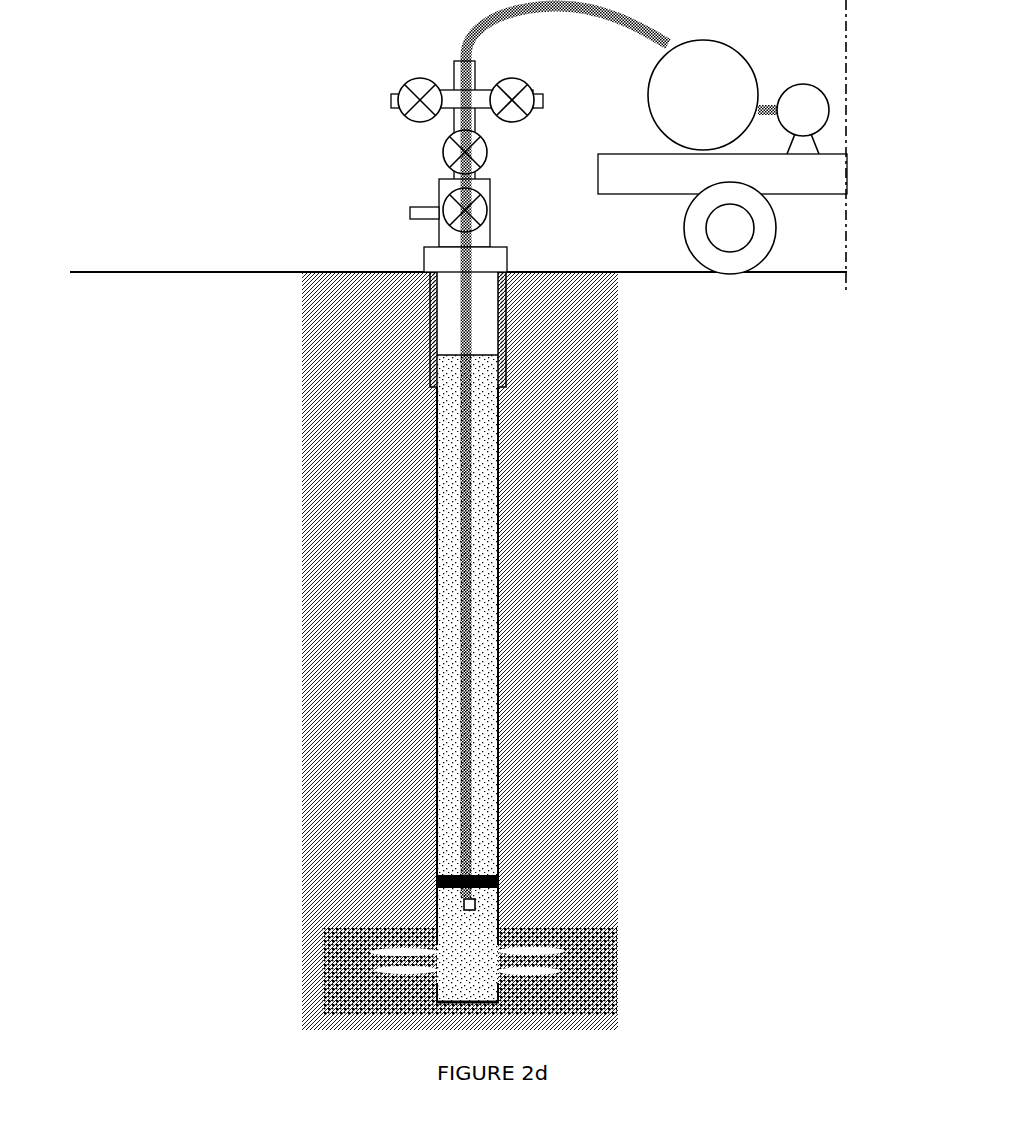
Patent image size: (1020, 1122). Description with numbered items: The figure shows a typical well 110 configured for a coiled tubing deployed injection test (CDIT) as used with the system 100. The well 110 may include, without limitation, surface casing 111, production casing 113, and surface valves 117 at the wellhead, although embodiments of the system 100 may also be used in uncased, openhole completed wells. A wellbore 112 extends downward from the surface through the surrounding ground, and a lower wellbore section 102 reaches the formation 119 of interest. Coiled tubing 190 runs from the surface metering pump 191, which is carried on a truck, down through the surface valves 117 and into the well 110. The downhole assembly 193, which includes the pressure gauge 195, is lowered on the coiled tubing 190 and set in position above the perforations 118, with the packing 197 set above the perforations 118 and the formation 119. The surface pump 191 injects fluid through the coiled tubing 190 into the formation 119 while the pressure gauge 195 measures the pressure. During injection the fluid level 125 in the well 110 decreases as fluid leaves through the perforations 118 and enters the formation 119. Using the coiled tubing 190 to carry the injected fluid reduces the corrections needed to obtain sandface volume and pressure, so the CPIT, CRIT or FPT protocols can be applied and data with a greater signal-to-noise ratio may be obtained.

The system 100 is at (436, 672).
The lower wellbore section 102 is at (437, 927).
The well 110 is at (392, 676).
The surface casing 111 is at (505, 385).
The wellbore 112 is at (500, 428).
The production casing 113 is at (499, 675).
The surface valves 117 is at (443, 148).
The perforations 118 is at (410, 968).
The formation 119 is at (337, 948).
The fluid level 125 is at (440, 355).
The coiled tubing 190 is at (472, 793).
The surface pump 191 is at (803, 120).
The downhole assembly 193 is at (512, 881).
The pressure gauge 195 is at (476, 904).
The packing 197 is at (437, 878).